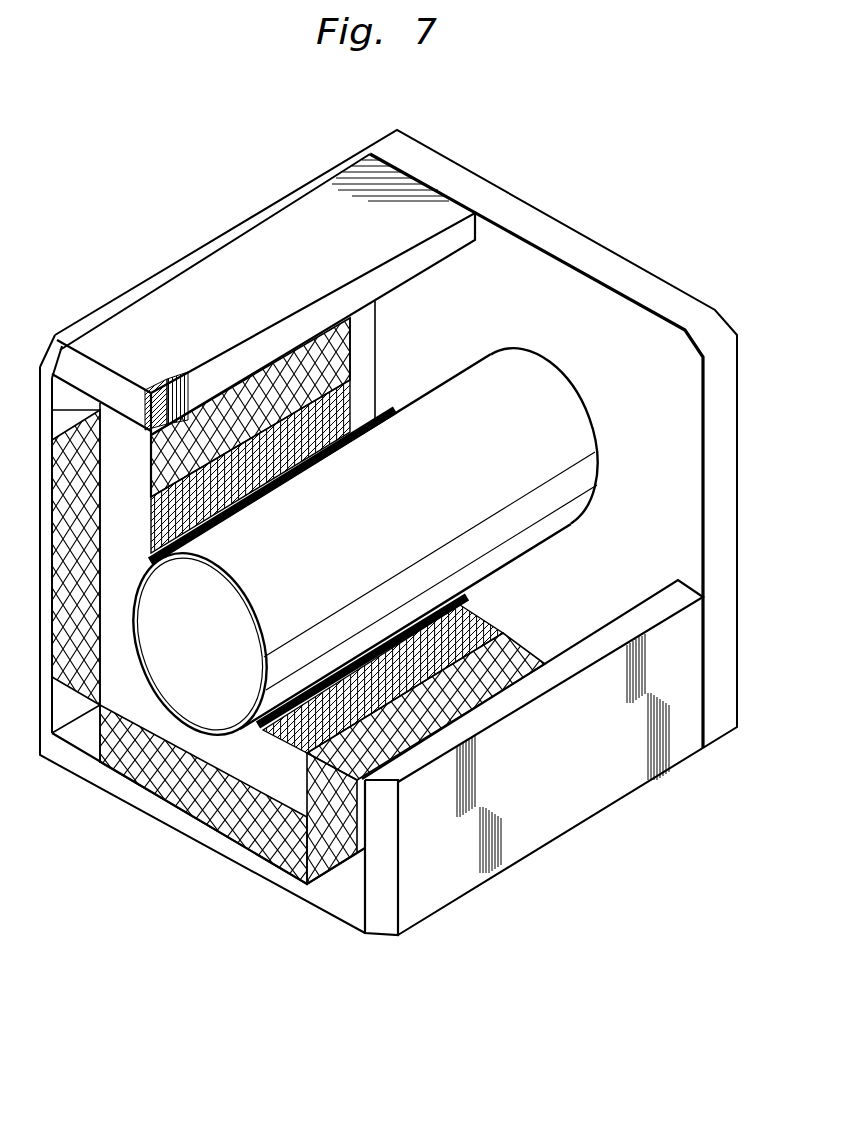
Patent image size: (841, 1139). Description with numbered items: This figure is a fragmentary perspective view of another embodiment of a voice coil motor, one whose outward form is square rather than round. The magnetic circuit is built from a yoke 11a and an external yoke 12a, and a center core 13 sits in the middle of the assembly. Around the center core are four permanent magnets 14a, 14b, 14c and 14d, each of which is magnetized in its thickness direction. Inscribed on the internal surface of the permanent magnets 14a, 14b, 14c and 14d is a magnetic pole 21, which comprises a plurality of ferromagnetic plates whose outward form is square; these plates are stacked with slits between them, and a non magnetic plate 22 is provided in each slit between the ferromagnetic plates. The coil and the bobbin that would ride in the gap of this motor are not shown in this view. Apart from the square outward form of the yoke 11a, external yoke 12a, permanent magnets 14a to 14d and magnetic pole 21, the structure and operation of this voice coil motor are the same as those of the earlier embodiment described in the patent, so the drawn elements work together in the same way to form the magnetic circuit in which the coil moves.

The yoke 11a is at (527, 282).
The external yoke 12a is at (408, 203).
The center core 13 is at (225, 693).
The permanent magnet 14a is at (70, 527).
The permanent magnet 14b is at (230, 785).
The permanent magnet 14c is at (328, 770).
The permanent magnet 14d is at (290, 372).
The magnetic pole 21 is at (272, 768).
The non magnetic plate 22 is at (310, 760).